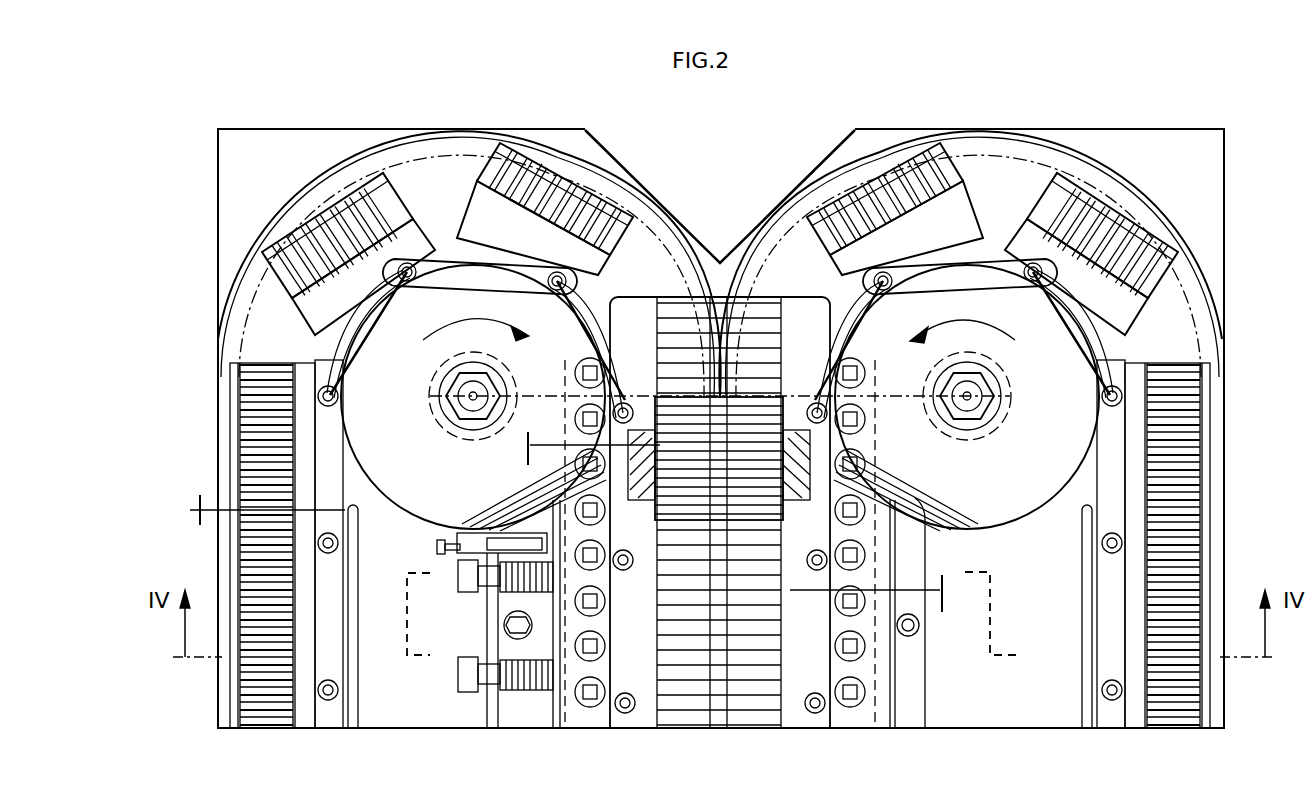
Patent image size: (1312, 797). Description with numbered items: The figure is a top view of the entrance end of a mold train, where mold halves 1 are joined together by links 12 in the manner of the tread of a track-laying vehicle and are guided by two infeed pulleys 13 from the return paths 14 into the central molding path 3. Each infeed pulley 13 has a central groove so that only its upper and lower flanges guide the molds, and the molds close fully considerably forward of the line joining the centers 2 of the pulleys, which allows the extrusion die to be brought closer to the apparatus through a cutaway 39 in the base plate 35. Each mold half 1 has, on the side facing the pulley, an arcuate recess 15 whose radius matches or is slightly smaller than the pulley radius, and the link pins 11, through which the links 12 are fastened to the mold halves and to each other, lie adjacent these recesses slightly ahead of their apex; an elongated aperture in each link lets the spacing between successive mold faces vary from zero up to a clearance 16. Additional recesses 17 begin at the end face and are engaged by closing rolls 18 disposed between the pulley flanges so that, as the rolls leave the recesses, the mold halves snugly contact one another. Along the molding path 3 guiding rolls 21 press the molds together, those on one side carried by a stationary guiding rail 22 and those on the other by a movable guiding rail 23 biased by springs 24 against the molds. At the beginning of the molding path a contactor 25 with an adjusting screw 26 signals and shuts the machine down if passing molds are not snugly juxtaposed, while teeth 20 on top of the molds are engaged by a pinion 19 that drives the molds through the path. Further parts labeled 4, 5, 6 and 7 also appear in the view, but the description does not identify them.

The mold halves 1 is at (455, 225).
The centers of the infeed pulleys 2 is at (465, 398).
The molding path 3 is at (740, 728).
The guide arc 4 is at (637, 208).
The upper roller brush unit 5 is at (500, 143).
The circular guide path 6 is at (447, 152).
The outer guide rail 7 is at (398, 147).
The link pins 11 is at (570, 280).
The links 12 is at (380, 318).
The infeed pulleys 13 is at (415, 490).
The return paths 14 is at (232, 460).
The arcuate recess 15 is at (540, 270).
The clearance 16 is at (550, 522).
The additional recesses 17 is at (720, 512).
The closing rolls 18 is at (719, 330).
The pinion 19 is at (788, 475).
The teeth 20 is at (362, 213).
The guiding rolls 21 is at (600, 630).
The stationary guiding rail 22 is at (907, 715).
The movable guiding rail 23 is at (567, 715).
The springs 24 is at (500, 668).
The contactor 25 is at (498, 555).
The adjusting screw 26 is at (437, 547).
The base plate 35 is at (232, 195).
The cutaway 39 is at (607, 150).